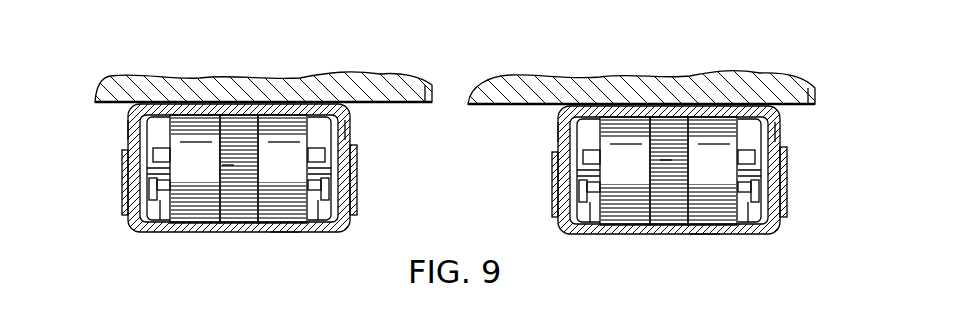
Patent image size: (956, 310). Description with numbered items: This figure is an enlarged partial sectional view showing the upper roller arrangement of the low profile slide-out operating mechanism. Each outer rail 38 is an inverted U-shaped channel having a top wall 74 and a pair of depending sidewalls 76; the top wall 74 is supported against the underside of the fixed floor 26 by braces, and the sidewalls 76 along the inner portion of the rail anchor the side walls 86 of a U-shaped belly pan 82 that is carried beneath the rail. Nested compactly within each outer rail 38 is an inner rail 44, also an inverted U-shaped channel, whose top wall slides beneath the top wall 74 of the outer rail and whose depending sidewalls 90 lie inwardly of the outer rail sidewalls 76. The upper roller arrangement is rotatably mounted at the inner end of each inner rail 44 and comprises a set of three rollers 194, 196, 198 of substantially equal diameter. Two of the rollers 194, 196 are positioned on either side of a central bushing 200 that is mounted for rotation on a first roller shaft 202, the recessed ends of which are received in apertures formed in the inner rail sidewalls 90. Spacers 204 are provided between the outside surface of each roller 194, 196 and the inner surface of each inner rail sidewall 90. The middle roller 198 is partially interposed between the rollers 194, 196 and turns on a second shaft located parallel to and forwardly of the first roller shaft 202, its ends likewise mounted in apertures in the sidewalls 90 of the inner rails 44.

The fixed floor 26 is at (273, 82).
The outer rail 38 is at (313, 100).
The inner rail 44 is at (338, 103).
The top wall 74 is at (167, 105).
The sidewalls 76 is at (130, 128).
The belly pan 82 is at (283, 235).
The side walls 86 is at (124, 187).
The sidewalls 90 is at (147, 200).
The roller 194 is at (199, 222).
The roller 196 is at (293, 207).
The middle roller 198 is at (241, 200).
The central bushing 200 is at (228, 165).
The first roller shaft 202 is at (150, 165).
The spacers 204 is at (165, 190).